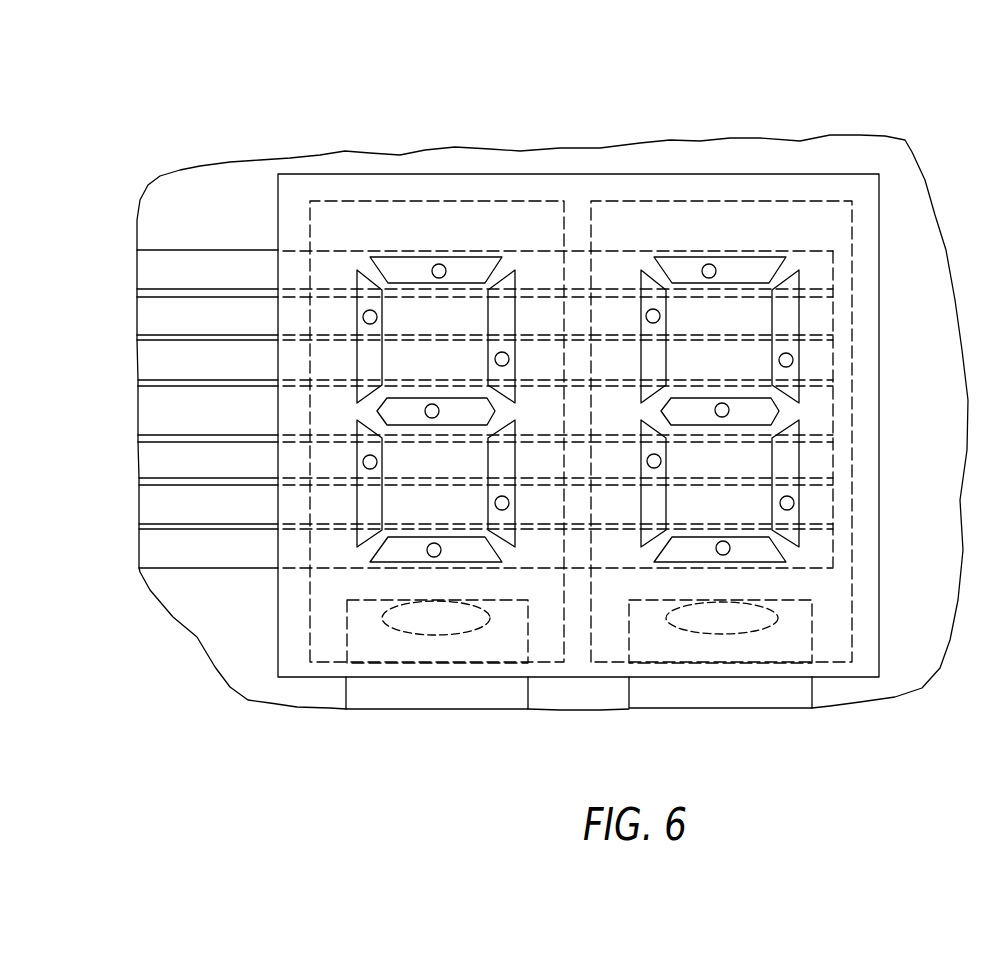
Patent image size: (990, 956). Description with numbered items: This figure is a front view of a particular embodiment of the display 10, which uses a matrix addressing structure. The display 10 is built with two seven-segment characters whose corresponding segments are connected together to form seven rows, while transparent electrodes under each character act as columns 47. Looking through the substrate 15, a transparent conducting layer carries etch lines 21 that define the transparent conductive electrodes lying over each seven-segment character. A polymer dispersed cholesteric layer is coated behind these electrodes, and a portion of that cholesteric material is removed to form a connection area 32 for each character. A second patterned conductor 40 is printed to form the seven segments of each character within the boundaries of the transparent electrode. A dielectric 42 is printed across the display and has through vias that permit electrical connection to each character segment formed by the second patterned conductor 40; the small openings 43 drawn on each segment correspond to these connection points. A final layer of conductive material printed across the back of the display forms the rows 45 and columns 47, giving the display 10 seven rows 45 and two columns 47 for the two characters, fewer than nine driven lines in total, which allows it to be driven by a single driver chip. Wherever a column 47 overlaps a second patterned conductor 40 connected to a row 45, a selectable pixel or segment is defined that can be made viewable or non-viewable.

The display 10 is at (707, 113).
The substrate 15 is at (870, 150).
The etch lines 21 is at (310, 622).
The connection area 32 is at (455, 625).
The second patterned conductor 40 is at (472, 262).
The dielectric 42 is at (303, 182).
The light emitting element 43 is at (440, 264).
The rows 45 is at (143, 263).
The columns 47 is at (388, 697).